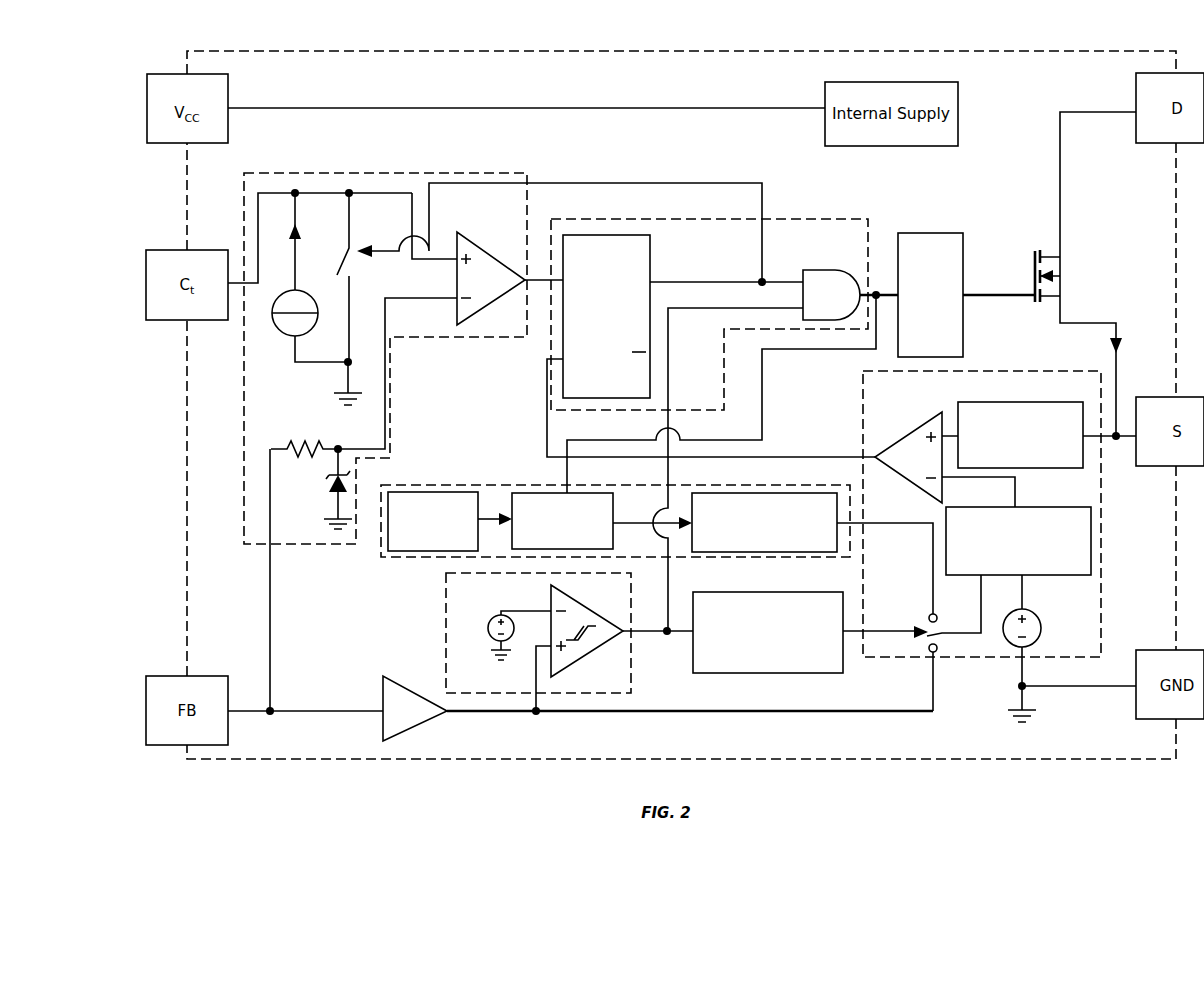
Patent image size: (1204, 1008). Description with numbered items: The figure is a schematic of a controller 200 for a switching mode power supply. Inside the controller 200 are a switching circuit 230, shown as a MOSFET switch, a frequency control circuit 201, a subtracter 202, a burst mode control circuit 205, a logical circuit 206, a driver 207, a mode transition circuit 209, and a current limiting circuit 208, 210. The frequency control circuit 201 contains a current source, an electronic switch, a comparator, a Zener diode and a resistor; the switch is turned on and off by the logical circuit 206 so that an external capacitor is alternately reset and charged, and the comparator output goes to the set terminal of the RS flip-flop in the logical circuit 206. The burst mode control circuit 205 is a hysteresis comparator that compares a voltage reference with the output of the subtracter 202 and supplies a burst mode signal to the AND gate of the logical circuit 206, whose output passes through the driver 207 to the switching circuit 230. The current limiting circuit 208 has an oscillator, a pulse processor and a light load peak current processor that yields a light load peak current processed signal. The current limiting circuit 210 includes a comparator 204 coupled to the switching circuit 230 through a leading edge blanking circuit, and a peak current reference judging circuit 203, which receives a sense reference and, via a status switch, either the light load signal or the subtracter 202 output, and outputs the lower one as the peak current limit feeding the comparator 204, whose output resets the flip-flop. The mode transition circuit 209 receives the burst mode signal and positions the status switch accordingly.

The controller 200 is at (160, 53).
The frequency control circuit 201 is at (365, 172).
The subtracter 202 is at (580, 715).
The peak current reference judging circuit 203 is at (1018, 541).
The comparator 204 is at (945, 459).
The burst mode control circuit 205 is at (632, 650).
The logical circuit 206 is at (848, 218).
The driver 207 is at (928, 232).
The current limiting circuit 208 is at (537, 484).
The mode transition circuit 209 is at (810, 632).
The current limiting circuit 210 is at (863, 416).
The switching circuit 230 is at (1089, 274).